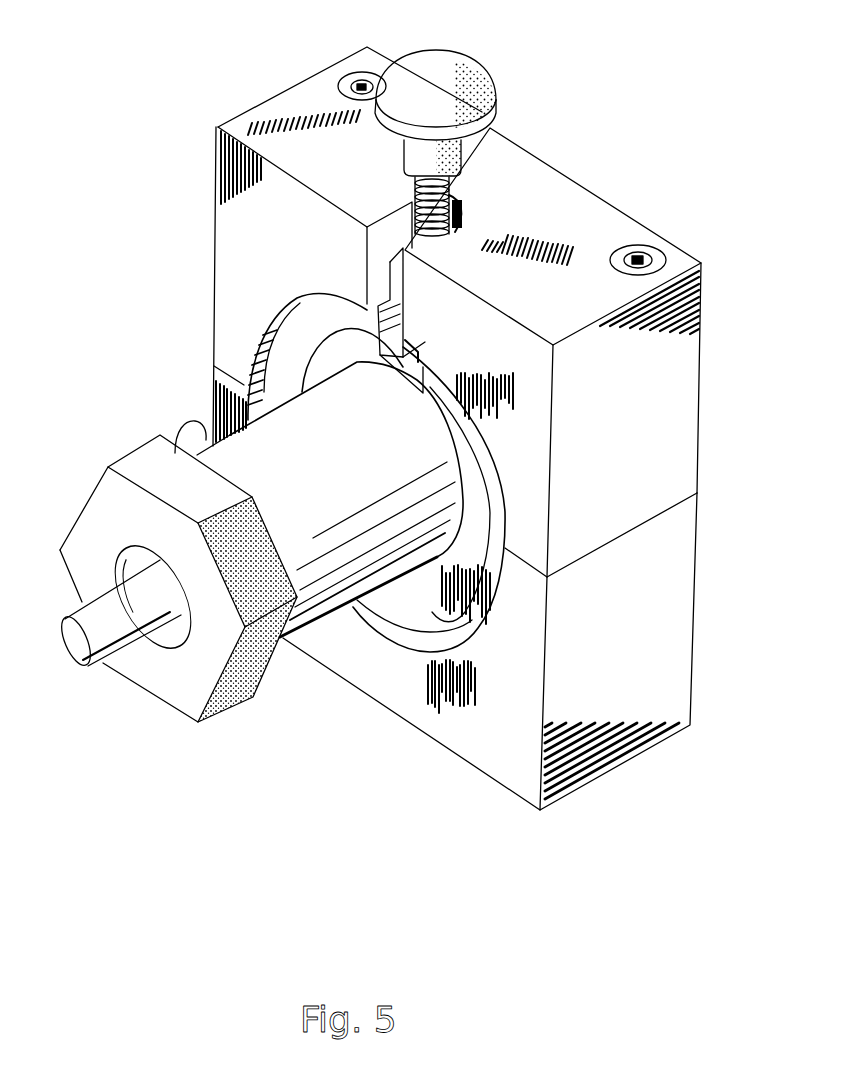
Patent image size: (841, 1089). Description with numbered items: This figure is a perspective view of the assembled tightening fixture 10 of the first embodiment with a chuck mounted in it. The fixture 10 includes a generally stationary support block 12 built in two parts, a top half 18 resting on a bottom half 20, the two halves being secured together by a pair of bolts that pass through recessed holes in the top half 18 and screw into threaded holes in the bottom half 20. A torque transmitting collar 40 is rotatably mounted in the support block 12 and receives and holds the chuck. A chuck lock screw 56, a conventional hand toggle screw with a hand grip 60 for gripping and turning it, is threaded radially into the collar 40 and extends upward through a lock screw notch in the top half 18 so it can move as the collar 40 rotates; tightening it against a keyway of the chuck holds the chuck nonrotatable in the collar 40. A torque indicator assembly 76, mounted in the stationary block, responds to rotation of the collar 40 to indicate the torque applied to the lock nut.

The tightening fixture 10 is at (420, 413).
The support block 12 is at (515, 428).
The top half 18 is at (663, 448).
The bottom half 20 is at (663, 612).
The torque transmitting collar 40 is at (457, 628).
The chuck lock screw 56 is at (420, 233).
The hand grip 60 is at (437, 80).
The torque indicator assembly 76 is at (197, 432).